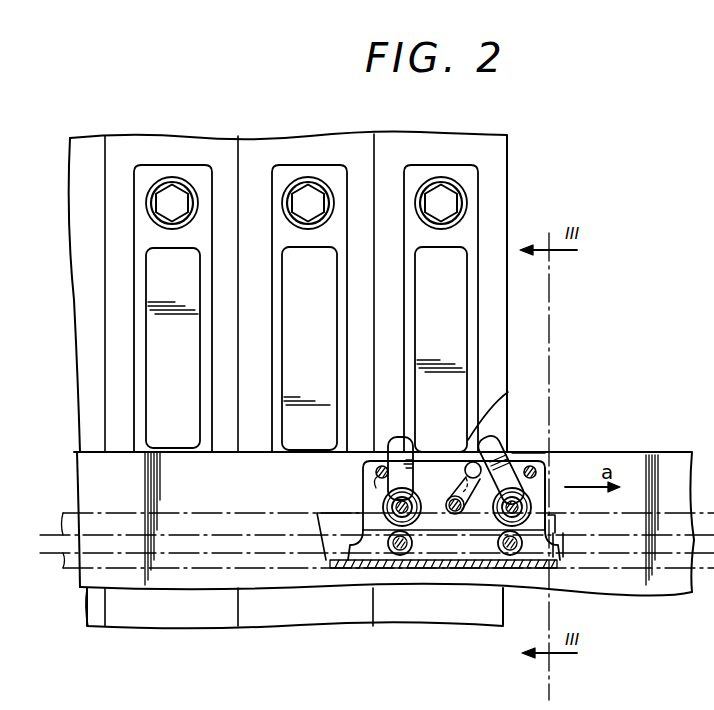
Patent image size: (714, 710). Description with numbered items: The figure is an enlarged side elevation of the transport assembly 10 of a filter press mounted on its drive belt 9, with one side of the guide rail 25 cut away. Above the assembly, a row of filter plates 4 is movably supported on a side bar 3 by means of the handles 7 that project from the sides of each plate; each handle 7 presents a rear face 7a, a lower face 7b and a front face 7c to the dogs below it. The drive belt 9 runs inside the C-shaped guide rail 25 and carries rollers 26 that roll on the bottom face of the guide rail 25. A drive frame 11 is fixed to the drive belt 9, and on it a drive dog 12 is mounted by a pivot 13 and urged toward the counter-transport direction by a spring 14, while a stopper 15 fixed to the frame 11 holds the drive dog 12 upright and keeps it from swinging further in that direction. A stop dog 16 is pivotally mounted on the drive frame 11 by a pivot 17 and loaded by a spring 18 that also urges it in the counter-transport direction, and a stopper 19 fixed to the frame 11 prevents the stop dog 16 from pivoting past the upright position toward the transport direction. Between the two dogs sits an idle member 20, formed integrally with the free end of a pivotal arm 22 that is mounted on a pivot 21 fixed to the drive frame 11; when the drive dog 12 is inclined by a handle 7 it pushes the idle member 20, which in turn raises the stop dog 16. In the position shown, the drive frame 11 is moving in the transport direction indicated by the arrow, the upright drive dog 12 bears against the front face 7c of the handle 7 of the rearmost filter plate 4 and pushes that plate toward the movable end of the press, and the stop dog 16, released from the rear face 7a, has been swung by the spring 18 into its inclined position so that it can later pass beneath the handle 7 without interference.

The side bar 3 is at (656, 456).
The filter plate 4 is at (352, 136).
The handle 7 is at (315, 347).
The rear face of handle 7a is at (501, 406).
The lower face of handle 7b is at (452, 497).
The front face of handle 7c is at (398, 437).
The drive belt 9 is at (203, 553).
The transport assembly 10 is at (549, 480).
The drive frame 11 is at (518, 460).
The drive dog 12 is at (375, 470).
The pivot 13 is at (352, 548).
The spring 14 is at (432, 531).
The stopper 15 is at (376, 488).
The stop dog 16 is at (497, 437).
The pivot 17 is at (485, 568).
The spring 18 is at (556, 545).
The stopper 19 is at (548, 468).
The idle member 20 is at (445, 452).
The pivot 21 is at (441, 508).
The pivotal arm 22 is at (463, 510).
The guide rail 25 is at (330, 565).
The roller 26 is at (405, 556).